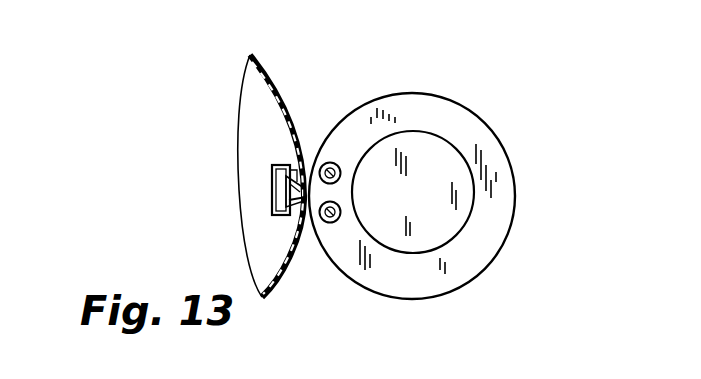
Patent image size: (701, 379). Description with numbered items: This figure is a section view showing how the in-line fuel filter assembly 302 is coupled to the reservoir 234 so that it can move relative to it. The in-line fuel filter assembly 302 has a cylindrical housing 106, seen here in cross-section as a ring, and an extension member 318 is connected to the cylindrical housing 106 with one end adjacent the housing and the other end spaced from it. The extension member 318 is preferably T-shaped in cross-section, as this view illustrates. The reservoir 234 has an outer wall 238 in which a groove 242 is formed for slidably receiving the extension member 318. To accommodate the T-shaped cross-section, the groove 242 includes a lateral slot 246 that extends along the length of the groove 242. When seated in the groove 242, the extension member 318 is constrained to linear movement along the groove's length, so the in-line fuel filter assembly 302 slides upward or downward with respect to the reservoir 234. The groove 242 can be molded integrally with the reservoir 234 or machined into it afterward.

The reservoir 234 is at (249, 95).
The outer wall 238 is at (265, 73).
The extension member 318 is at (272, 189).
The lateral slot 246 is at (272, 202).
The groove 242 is at (306, 197).
The in-line fuel filter assembly 302 is at (512, 122).
The cylindrical housing 106 is at (509, 231).